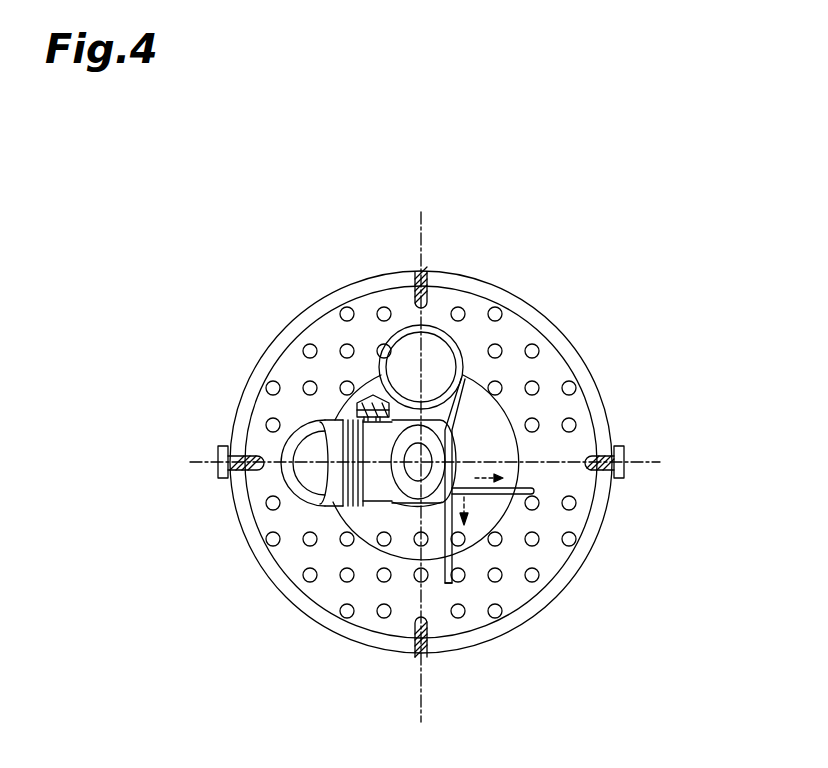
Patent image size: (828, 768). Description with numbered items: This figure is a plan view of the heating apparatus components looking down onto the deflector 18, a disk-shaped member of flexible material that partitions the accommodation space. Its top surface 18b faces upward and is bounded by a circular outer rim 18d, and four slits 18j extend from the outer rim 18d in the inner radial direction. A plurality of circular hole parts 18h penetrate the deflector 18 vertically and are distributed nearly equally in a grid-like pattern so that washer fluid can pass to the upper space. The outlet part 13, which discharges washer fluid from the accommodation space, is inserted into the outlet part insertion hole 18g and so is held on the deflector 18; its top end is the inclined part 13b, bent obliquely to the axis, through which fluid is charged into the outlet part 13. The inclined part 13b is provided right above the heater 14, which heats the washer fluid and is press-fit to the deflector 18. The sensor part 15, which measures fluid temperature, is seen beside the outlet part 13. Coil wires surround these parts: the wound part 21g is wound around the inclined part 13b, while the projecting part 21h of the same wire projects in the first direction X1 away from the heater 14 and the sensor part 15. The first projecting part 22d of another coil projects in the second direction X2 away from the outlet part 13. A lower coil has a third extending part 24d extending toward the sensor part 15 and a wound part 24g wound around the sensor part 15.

The outlet part 13 is at (312, 447).
The inclined part 13b is at (405, 500).
The heater 14 is at (461, 386).
The sensor part 15 is at (452, 353).
The deflector 18 is at (549, 563).
The top surface 18b is at (583, 428).
The outer rim 18d is at (592, 368).
The outlet part insertion hole 18g is at (303, 495).
The hole parts 18h is at (540, 507).
The slit 18j is at (418, 272).
The wound part 21g is at (352, 424).
The projecting part 21h is at (452, 585).
The first projecting part 22d is at (533, 484).
The third extending part 24d is at (478, 415).
The wound part 24g is at (427, 327).
The first direction X1 is at (466, 515).
The second direction X2 is at (483, 476).